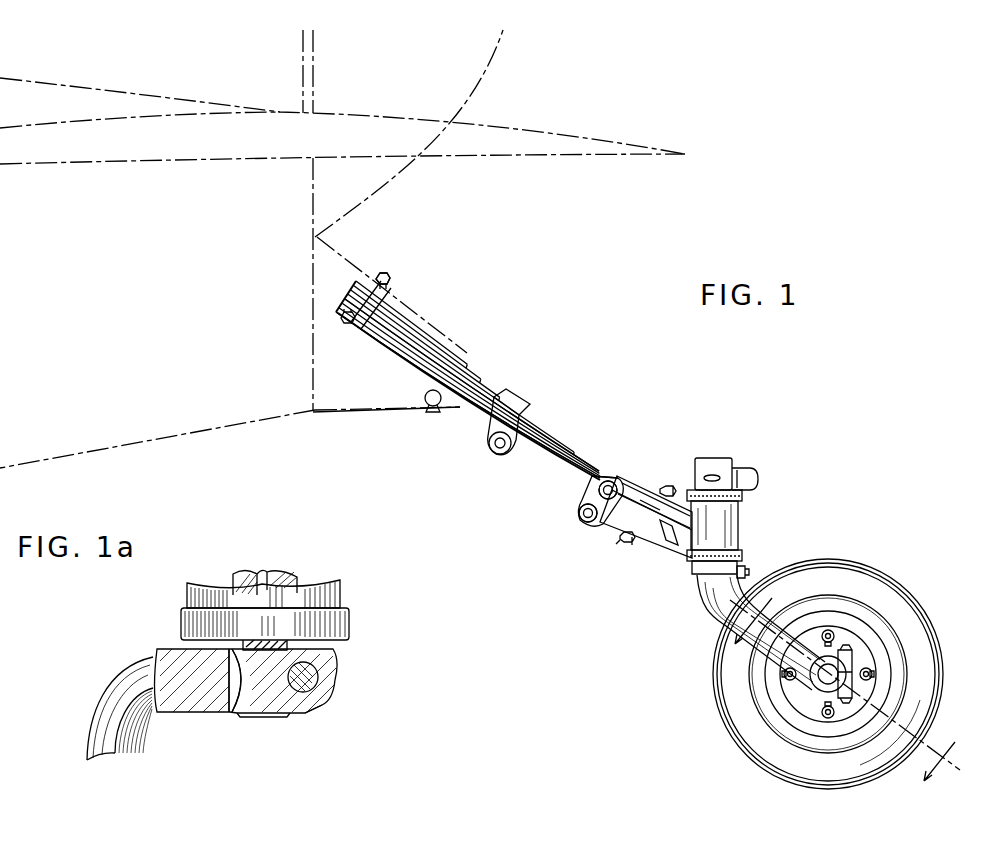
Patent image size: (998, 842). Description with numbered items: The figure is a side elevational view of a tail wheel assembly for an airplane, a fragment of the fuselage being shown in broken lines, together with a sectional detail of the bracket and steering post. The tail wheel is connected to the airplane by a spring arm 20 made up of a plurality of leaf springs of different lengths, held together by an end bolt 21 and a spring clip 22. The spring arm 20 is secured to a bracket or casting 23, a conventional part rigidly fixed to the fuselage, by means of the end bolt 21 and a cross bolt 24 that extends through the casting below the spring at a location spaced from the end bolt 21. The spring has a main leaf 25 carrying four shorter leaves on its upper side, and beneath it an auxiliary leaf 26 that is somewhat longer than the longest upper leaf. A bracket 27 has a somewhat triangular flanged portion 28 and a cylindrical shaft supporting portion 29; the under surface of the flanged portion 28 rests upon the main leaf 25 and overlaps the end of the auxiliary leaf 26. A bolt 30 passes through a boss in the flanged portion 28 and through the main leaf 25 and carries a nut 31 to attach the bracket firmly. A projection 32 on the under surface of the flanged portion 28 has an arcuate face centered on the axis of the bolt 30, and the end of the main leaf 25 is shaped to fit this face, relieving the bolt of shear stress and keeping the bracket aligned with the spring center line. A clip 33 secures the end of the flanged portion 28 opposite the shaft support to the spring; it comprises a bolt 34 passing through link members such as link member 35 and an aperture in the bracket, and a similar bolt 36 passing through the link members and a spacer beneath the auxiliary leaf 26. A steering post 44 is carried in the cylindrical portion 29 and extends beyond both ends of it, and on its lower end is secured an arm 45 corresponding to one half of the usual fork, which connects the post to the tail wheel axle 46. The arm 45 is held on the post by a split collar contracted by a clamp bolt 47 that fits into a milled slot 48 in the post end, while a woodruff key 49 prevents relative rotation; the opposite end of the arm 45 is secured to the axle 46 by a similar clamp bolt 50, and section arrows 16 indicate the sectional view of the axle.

In FIG. 1, the section line 16 is at (841, 703).
In FIG. 1, the spring arm 20 is at (393, 276).
In FIG. 1, the end bolt 21 is at (383, 278).
In FIG. 1, the spring clip 22 is at (526, 419).
In FIG. 1, the bracket or casting 23 is at (347, 413).
In FIG. 1, the cross bolt 24 is at (430, 406).
In FIG. 1, the main leaf 25 is at (573, 466).
In FIG. 1, the auxiliary leaf 26 is at (538, 460).
In FIG. 1, the bracket 27 is at (636, 497).
In FIG. 1, the flanged portion 28 is at (655, 528).
In FIG. 1, the cylindrical shaft supporting portion 29 is at (731, 528).
In FIG. 1a, the cylindrical shaft supporting portion 29 is at (341, 597).
In FIG. 1, the bolt 30 is at (668, 486).
In FIG. 1, the nut 31 is at (624, 546).
In FIG. 1, the projection 32 is at (672, 558).
In FIG. 1, the clip 33 is at (579, 514).
In FIG. 1, the bolt 34 is at (607, 482).
In FIG. 1, the link member 35 is at (592, 500).
In FIG. 1, the bolt 36 is at (584, 524).
In FIG. 1a, the steering post 44 is at (250, 573).
In FIG. 1, the arm 45 is at (713, 612).
In FIG. 1a, the arm 45 is at (110, 690).
In FIG. 1, the tail wheel axle 46 is at (826, 681).
In FIG. 1, the clamp bolt 47 is at (744, 570).
In FIG. 1a, the clamp bolt 47 is at (318, 670).
In FIG. 1a, the milled groove or slot 48 is at (293, 716).
In FIG. 1a, the woodruff key 49 is at (233, 687).
In FIG. 1, the clamp bolt 50 is at (848, 645).